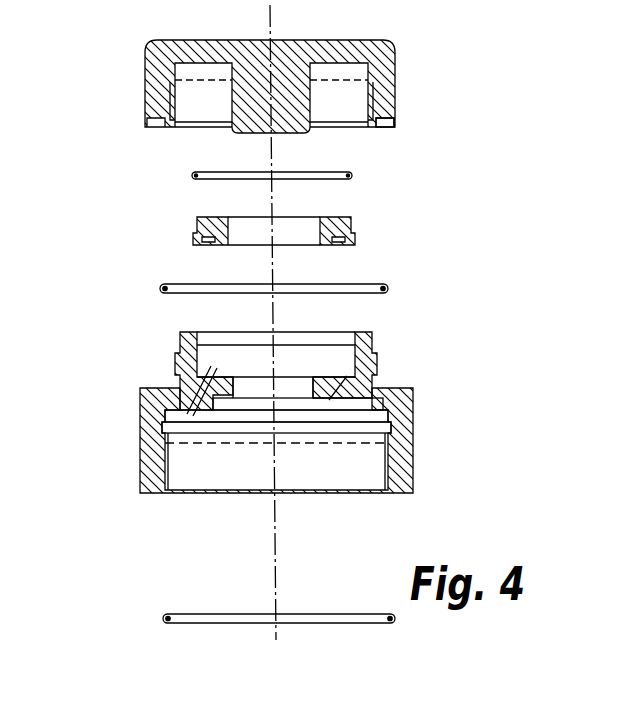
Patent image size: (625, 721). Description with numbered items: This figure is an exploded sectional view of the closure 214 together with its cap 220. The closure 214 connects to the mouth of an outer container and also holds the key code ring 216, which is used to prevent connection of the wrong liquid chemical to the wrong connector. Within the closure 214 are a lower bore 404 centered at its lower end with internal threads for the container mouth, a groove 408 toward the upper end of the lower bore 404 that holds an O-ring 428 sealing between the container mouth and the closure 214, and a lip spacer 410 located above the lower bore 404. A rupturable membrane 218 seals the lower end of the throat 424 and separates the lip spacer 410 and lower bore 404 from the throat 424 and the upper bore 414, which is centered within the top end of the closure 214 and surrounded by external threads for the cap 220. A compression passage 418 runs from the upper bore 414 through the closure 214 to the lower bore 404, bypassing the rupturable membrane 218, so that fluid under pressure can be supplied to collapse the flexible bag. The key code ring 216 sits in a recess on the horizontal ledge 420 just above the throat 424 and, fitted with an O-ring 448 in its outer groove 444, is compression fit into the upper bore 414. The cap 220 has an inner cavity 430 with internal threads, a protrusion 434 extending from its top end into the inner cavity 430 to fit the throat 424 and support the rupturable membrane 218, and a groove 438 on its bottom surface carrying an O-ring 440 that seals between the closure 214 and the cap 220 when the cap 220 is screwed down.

The cap 220 is at (128, 36).
The inner cavity 430 is at (343, 90).
The protrusion 434 is at (253, 117).
The groove 438 is at (383, 127).
The O-ring 448 is at (351, 175).
The outer groove 444 is at (196, 231).
The key code ring 216 is at (354, 234).
The O-ring 440 is at (386, 287).
The closure 214 is at (95, 363).
The lower bore 404 is at (365, 470).
The throat 424 is at (258, 386).
The groove 408 is at (378, 428).
The upper bore 414 is at (231, 410).
The rupturable membrane 218 is at (332, 410).
The horizontal ledge 420 is at (229, 380).
The lip spacer 410 is at (335, 403).
The compression passage 418 is at (187, 405).
The O-ring 428 is at (333, 621).